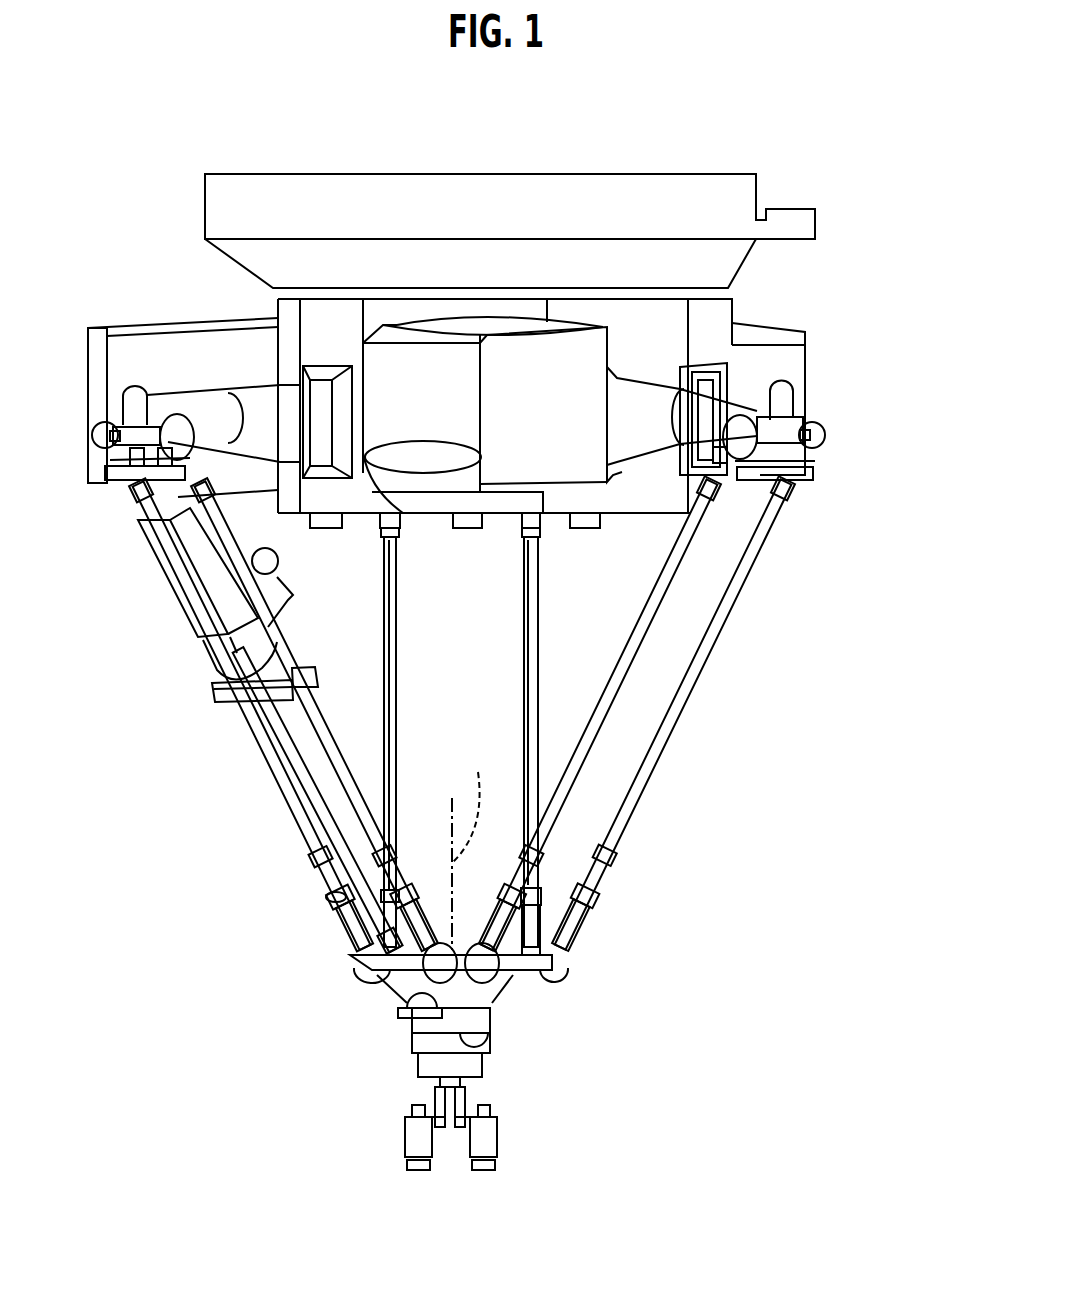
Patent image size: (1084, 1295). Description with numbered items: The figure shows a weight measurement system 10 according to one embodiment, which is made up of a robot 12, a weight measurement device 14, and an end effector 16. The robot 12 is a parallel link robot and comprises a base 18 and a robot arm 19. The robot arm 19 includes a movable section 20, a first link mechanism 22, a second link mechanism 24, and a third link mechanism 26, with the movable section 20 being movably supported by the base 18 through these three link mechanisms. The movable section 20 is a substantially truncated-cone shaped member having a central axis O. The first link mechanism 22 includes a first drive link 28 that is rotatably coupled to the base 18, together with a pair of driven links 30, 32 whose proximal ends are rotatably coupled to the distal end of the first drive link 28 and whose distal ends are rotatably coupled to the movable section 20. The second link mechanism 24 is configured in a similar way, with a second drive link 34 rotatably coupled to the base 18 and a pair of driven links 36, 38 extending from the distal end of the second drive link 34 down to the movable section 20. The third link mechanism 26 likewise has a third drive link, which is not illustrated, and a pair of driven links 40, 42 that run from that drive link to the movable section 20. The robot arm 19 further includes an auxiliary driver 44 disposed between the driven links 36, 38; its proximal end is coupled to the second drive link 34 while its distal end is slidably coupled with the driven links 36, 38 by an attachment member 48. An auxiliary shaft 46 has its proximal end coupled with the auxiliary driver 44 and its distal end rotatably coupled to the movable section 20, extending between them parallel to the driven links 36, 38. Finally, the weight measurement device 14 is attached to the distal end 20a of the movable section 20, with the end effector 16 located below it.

The weight measurement system 10 is at (769, 109).
The robot 12 is at (171, 168).
The weight measurement device 14 is at (499, 1050).
The end effector 16 is at (512, 1127).
The base 18 is at (806, 368).
The robot arm 19 is at (768, 573).
The movable section 20 is at (384, 1001).
The distal end 20a is at (457, 1043).
The first link mechanism 22 is at (681, 738).
The second link mechanism 24 is at (256, 757).
The third link mechanism 26 is at (548, 614).
The first drive link 28 is at (707, 407).
The driven link 30 is at (717, 643).
The driven link 32 is at (608, 690).
The second drive link 34 is at (220, 407).
The driven link 36 is at (287, 820).
The driven link 38 is at (333, 730).
The driven link 40 is at (523, 667).
The driven link 42 is at (397, 608).
The auxiliary driver 44 is at (183, 577).
The auxiliary shaft 46 is at (338, 880).
The attachment member 48 is at (213, 688).